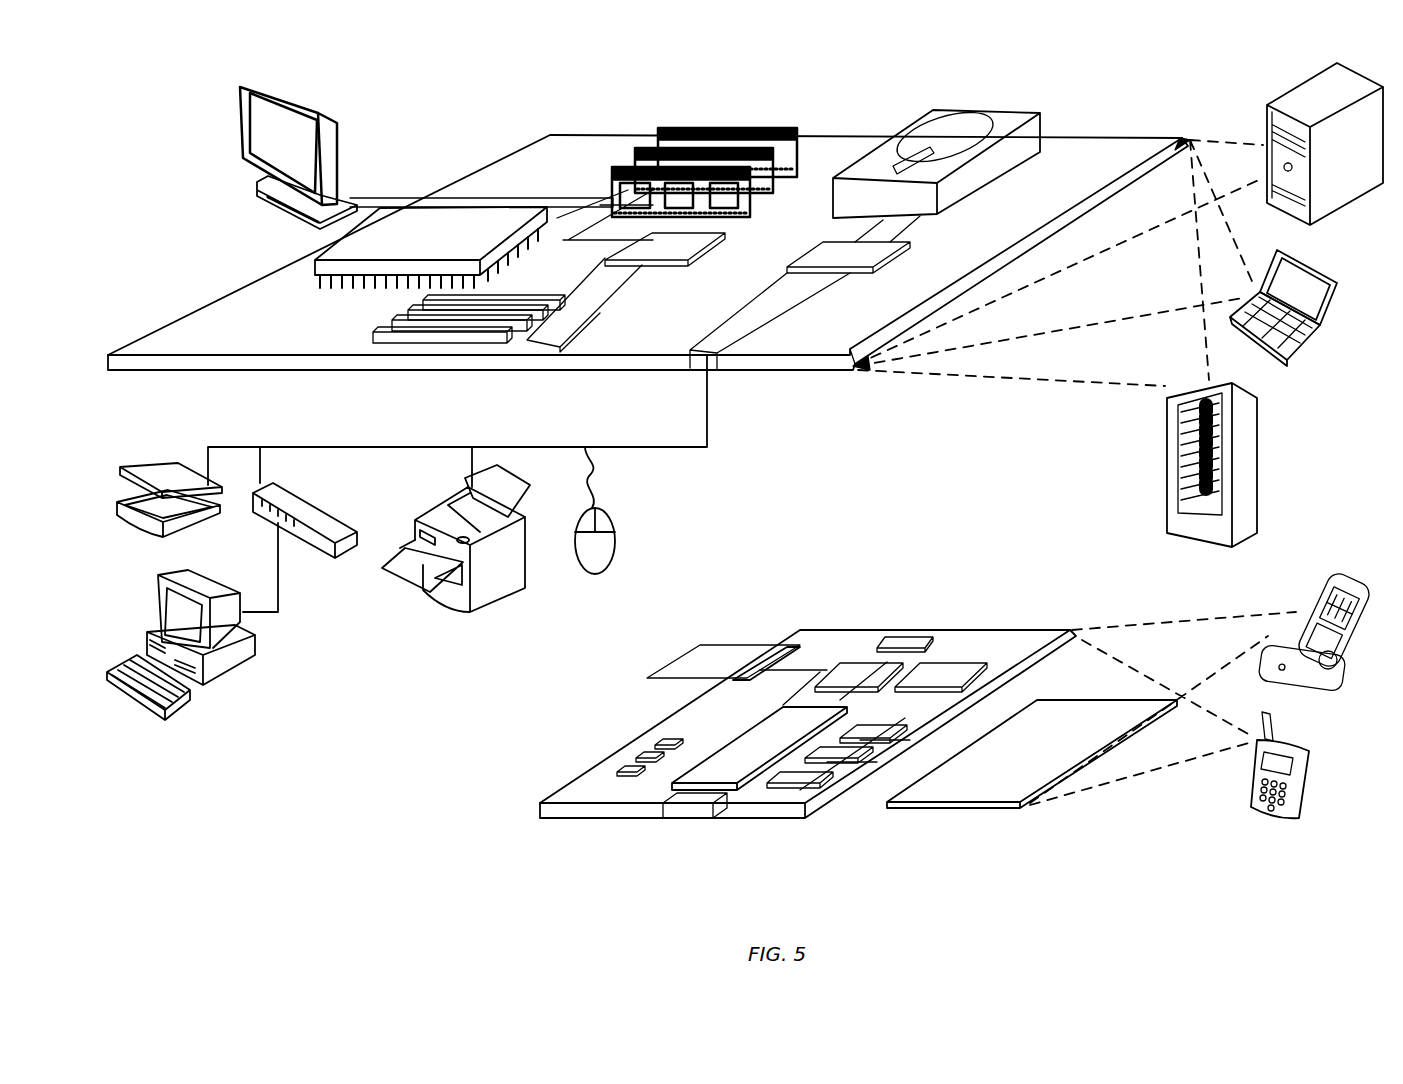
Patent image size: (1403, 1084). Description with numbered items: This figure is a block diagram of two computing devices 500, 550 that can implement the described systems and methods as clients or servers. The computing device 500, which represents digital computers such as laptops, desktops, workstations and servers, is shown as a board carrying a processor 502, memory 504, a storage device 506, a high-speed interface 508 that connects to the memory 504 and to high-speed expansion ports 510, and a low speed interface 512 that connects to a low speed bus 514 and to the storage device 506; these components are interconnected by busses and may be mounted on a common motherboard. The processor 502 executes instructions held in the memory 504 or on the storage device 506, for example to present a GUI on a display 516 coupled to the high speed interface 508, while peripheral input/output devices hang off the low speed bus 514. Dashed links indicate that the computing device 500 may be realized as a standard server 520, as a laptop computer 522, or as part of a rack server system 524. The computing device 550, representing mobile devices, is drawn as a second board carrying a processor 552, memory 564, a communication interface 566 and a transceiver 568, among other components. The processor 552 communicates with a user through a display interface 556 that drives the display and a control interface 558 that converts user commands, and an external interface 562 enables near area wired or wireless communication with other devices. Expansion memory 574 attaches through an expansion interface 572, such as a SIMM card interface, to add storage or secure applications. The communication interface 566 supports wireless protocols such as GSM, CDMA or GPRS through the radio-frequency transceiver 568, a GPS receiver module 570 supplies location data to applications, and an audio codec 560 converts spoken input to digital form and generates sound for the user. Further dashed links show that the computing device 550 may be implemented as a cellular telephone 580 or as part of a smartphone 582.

The computing device 500 is at (450, 103).
The processor 502 is at (313, 263).
The memory 504 is at (667, 127).
The storage device 506 is at (918, 114).
The high-speed interface 508 is at (627, 247).
The high-speed expansion ports 510 is at (393, 329).
The low speed interface 512 is at (827, 246).
The low speed bus 514 is at (707, 356).
The display 516 is at (247, 90).
The standard server 520 is at (1266, 122).
The laptop computer 522 is at (1340, 283).
The rack server system 524 is at (1167, 488).
The computing device 550 is at (510, 816).
The processor 552 is at (732, 772).
The display interface 556 is at (838, 785).
The control interface 558 is at (858, 752).
The audio codec 560 is at (880, 735).
The external interface 562 is at (693, 805).
The memory 564 is at (624, 758).
The communication interface 566 is at (858, 678).
The transceiver 568 is at (943, 670).
The GPS receiver module 570 is at (897, 640).
The expansion interface 572 is at (773, 645).
The expansion memory 574 is at (700, 645).
The cellular telephone 580 is at (1316, 585).
The smartphone 582 is at (1257, 782).